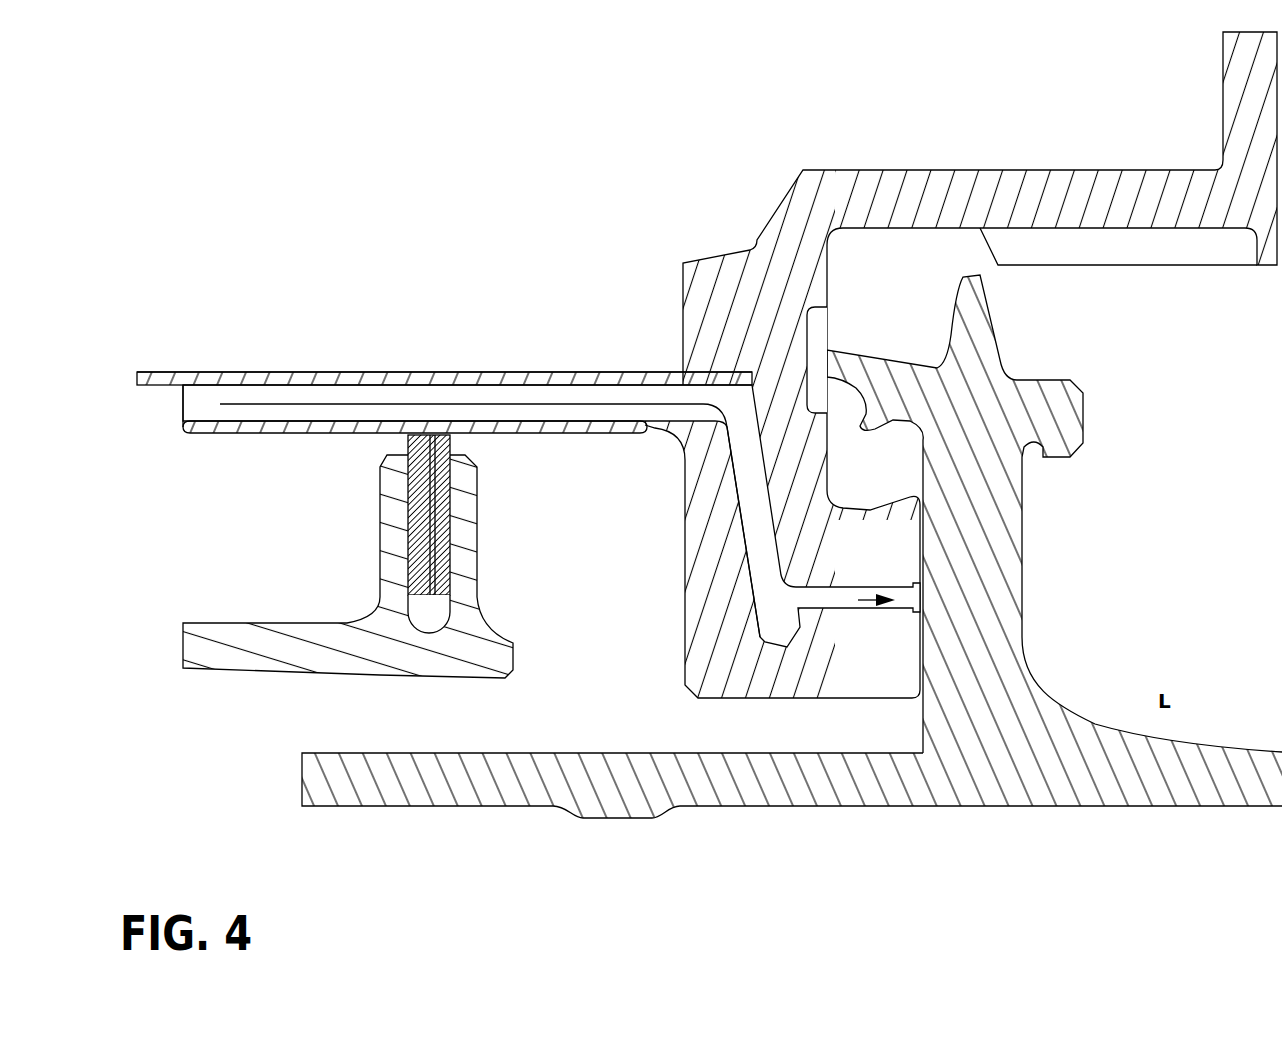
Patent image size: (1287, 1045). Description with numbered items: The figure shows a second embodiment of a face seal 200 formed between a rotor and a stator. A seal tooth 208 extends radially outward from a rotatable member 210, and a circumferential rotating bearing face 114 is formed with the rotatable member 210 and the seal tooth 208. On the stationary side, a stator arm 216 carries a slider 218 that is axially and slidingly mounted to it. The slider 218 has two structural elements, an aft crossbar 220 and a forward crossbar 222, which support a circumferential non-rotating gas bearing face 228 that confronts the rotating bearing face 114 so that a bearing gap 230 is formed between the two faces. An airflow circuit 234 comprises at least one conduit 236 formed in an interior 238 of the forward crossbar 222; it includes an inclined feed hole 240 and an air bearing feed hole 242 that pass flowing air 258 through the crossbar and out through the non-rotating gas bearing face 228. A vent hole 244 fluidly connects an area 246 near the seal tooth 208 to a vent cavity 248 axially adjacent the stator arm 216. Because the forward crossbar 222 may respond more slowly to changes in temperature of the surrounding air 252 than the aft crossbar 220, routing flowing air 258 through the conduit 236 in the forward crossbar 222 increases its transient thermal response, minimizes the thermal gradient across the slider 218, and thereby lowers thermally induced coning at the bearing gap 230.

The face seal 200 is at (1056, 75).
The seal tooth 208 is at (963, 357).
The rotatable member 210 is at (988, 787).
The rotating bearing face 114 is at (925, 540).
The stator arm 216 is at (305, 672).
The slider 218 is at (625, 312).
The aft crossbar 220 is at (1115, 168).
The forward crossbar 222 is at (565, 357).
The non-rotating gas bearing face 228 is at (918, 660).
The bearing gap 230 is at (918, 708).
The airflow circuit 234 is at (398, 403).
The conduit 236 is at (308, 393).
The interior 238 is at (456, 381).
The inclined feed hole 240 is at (740, 443).
The air bearing feed hole 242 is at (897, 598).
The vent hole 244 is at (720, 555).
The area proximate the primary tooth 246 is at (876, 483).
The vent cavity 248 is at (533, 576).
The surrounding air 252 is at (408, 105).
The flowing air 258 is at (755, 480).